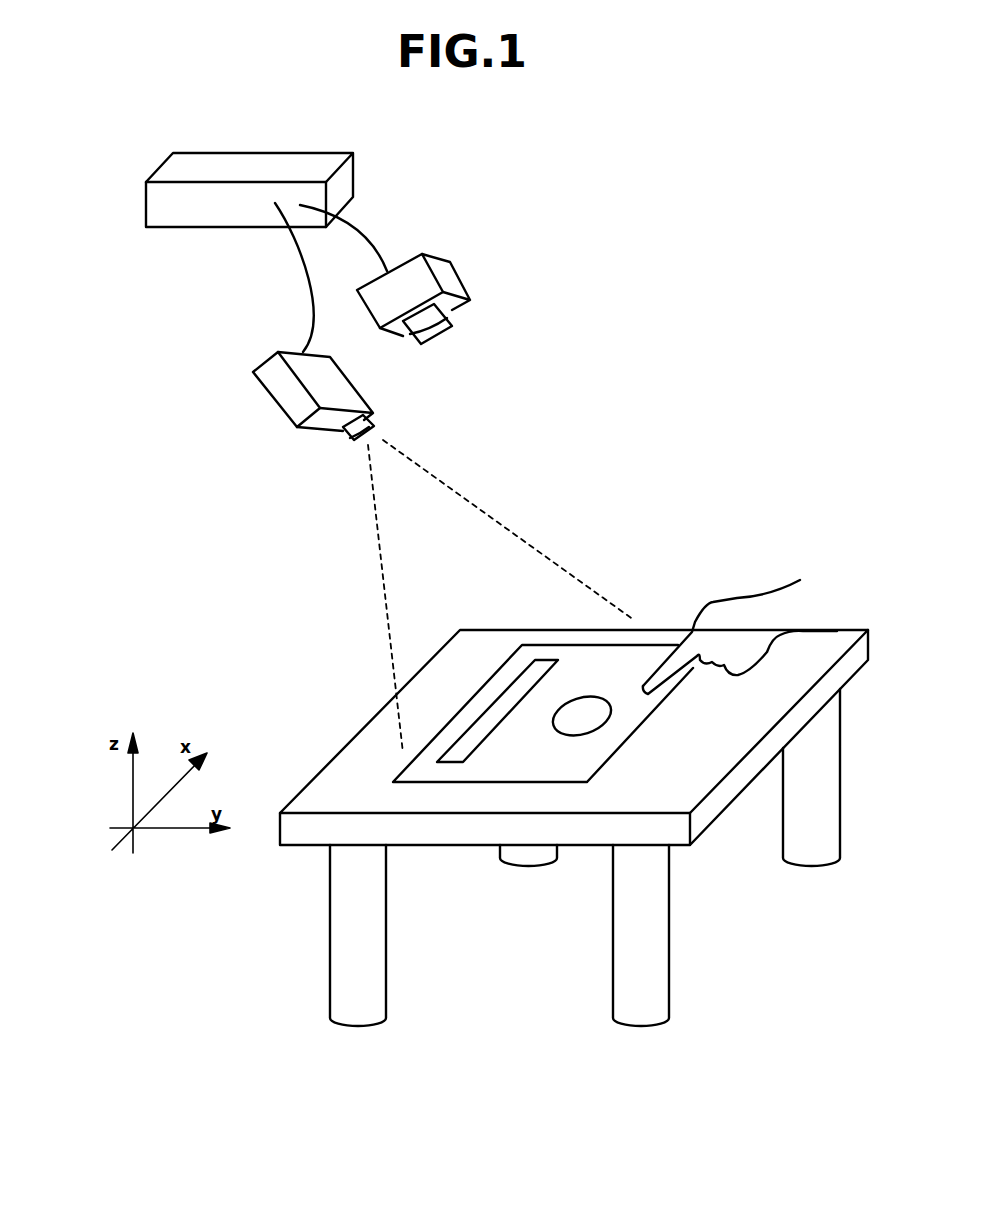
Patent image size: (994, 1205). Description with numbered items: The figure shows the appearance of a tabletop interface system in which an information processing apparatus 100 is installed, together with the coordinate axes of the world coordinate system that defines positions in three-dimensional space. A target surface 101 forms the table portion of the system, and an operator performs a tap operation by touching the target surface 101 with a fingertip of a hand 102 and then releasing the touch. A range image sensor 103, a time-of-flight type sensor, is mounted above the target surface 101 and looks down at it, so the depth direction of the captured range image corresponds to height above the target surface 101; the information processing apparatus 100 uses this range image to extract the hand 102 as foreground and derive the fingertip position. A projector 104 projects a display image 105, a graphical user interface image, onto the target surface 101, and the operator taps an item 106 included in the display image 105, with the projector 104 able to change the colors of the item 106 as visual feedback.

The information processing apparatus 100 is at (146, 206).
The target surface 101 is at (360, 733).
The hand 102 is at (737, 598).
The range image sensor 103 is at (463, 313).
The projector 104 is at (267, 360).
The display image 105 is at (488, 762).
The item 106 is at (590, 718).